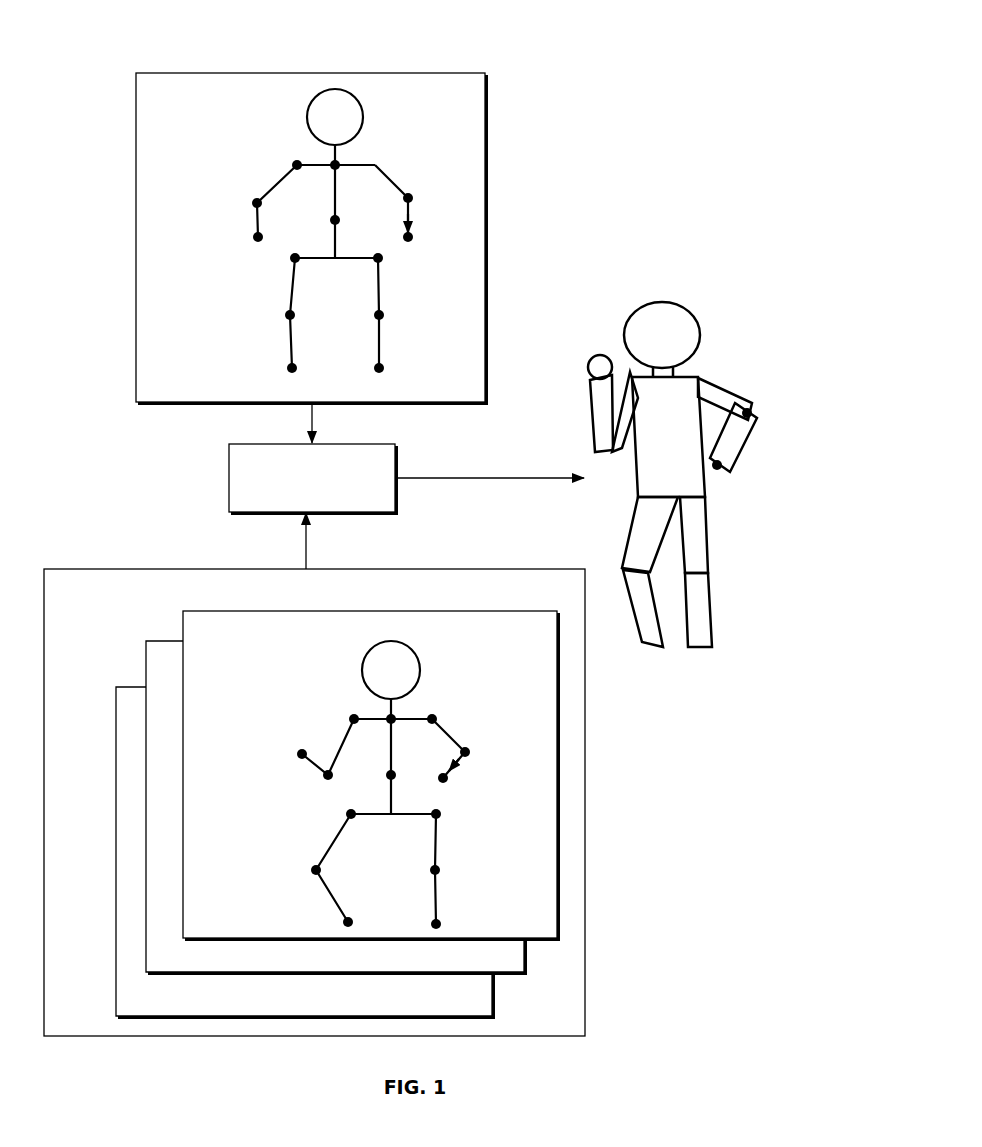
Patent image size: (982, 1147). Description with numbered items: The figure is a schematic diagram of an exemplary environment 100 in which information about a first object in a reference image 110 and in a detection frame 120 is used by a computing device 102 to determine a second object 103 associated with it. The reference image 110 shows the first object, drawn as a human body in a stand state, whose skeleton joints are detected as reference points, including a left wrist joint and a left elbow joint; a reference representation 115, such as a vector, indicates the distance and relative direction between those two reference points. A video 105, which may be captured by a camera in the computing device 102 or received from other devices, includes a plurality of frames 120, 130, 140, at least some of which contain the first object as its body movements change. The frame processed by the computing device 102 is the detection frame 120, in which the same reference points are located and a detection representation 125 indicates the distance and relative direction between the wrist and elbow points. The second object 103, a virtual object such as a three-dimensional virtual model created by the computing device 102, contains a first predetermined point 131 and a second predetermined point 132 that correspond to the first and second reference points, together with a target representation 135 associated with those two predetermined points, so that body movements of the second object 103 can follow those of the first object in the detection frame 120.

The exemplary environment 100 is at (84, 41).
The computing device 102 is at (327, 444).
The second object 103 is at (691, 473).
The video 105 is at (410, 569).
The reference image 110 is at (310, 73).
The reference representation 115 is at (410, 214).
The detection frame 120 is at (392, 611).
The detection representation 125 is at (452, 771).
The frame 130 is at (168, 640).
The first predetermined point 131 is at (722, 471).
The second predetermined point 132 is at (753, 413).
The target representation 135 is at (743, 437).
The frame 140 is at (116, 879).